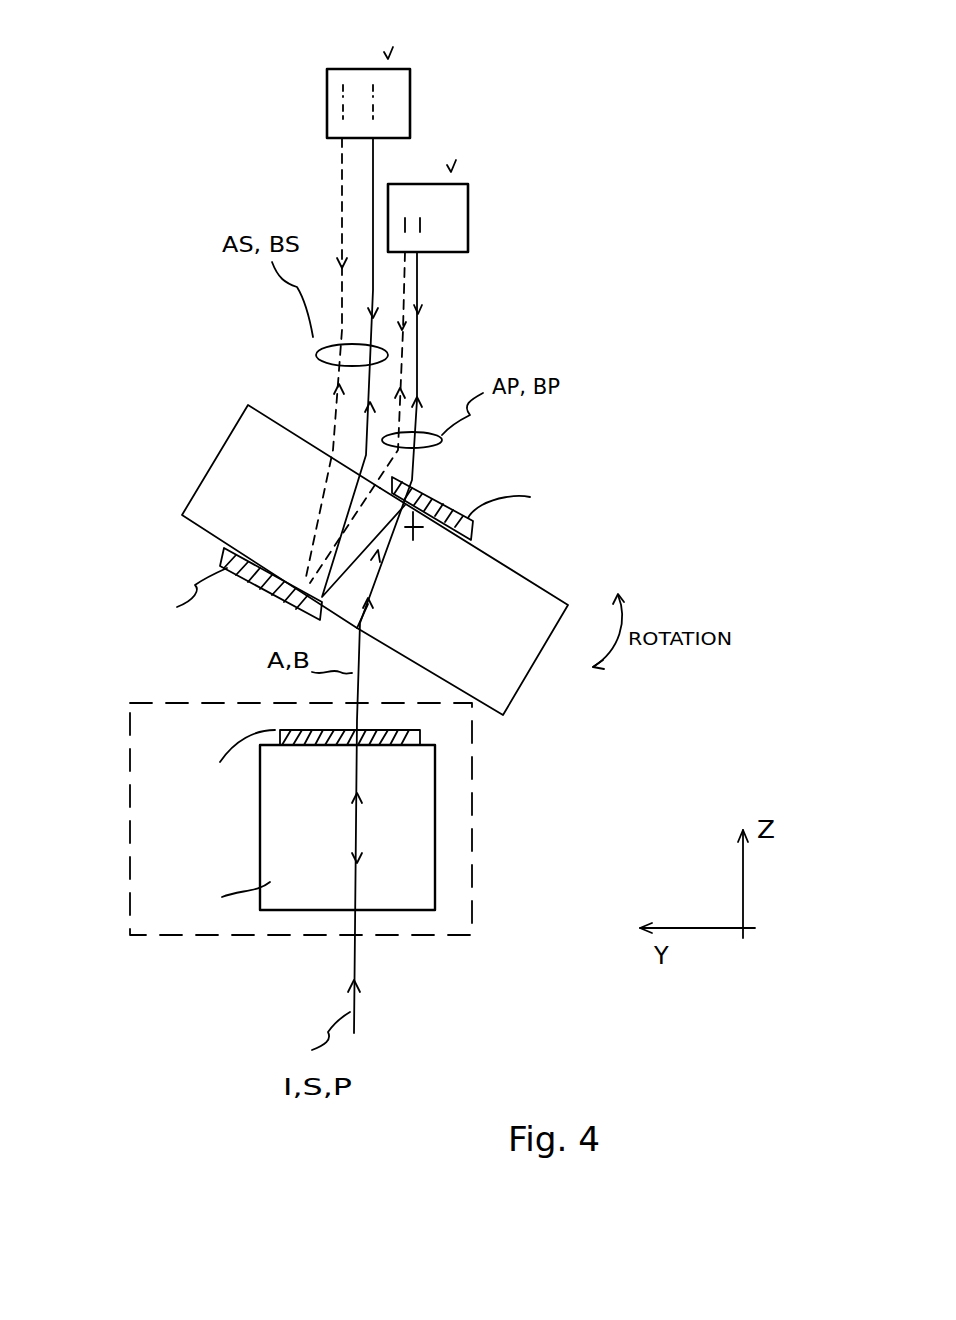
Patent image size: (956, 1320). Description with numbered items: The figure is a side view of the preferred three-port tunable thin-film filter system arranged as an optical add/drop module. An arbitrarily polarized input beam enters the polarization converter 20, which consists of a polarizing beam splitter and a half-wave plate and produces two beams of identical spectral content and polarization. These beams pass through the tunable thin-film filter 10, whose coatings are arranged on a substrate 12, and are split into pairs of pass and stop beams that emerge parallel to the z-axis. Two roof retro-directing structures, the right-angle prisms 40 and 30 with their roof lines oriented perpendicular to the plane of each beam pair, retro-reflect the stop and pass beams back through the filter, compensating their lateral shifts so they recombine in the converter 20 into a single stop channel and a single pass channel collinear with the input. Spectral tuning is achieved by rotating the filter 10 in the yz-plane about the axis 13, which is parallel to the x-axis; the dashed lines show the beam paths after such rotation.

The tunable thin-film filter 10 is at (348, 527).
The substrate 12 is at (242, 457).
The rotation axis 13 is at (437, 535).
The polarization converter 20 is at (118, 833).
The right-angle prism 30 is at (470, 226).
The right-angle prism 40 is at (327, 88).